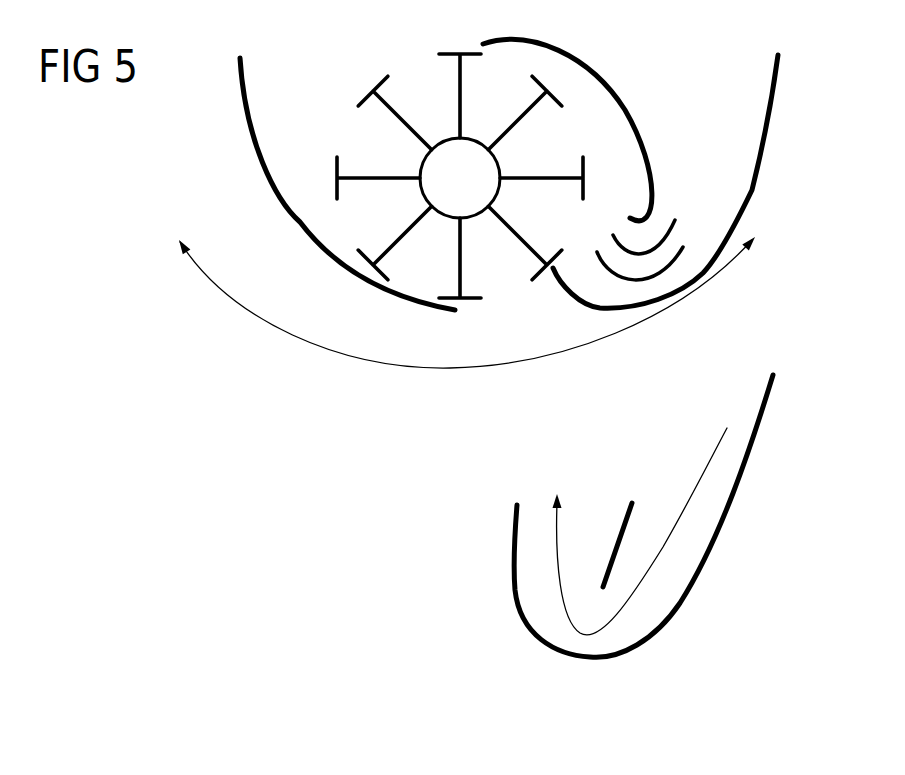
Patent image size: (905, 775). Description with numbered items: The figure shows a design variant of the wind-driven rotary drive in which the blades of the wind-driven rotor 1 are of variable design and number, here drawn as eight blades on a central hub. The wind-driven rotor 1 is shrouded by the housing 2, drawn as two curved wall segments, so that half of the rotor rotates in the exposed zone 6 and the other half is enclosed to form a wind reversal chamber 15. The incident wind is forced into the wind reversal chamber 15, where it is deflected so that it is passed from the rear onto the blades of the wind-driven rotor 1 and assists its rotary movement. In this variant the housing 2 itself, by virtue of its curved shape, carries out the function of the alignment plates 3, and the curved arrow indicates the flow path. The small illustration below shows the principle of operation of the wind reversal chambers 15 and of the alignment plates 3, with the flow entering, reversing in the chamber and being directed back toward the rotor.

The wind-driven rotor 1 is at (441, 136).
The housing 2 is at (515, 37).
The alignment plates 3 is at (650, 283).
The exposed zone 6 is at (290, 82).
The wind reversal chamber 15 is at (682, 267).